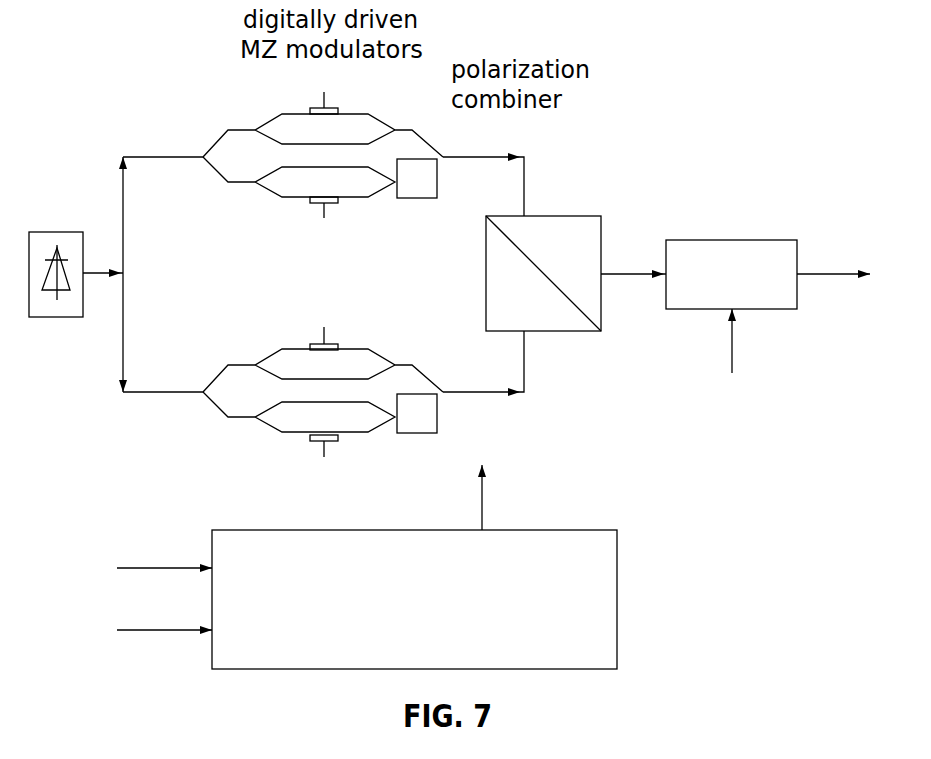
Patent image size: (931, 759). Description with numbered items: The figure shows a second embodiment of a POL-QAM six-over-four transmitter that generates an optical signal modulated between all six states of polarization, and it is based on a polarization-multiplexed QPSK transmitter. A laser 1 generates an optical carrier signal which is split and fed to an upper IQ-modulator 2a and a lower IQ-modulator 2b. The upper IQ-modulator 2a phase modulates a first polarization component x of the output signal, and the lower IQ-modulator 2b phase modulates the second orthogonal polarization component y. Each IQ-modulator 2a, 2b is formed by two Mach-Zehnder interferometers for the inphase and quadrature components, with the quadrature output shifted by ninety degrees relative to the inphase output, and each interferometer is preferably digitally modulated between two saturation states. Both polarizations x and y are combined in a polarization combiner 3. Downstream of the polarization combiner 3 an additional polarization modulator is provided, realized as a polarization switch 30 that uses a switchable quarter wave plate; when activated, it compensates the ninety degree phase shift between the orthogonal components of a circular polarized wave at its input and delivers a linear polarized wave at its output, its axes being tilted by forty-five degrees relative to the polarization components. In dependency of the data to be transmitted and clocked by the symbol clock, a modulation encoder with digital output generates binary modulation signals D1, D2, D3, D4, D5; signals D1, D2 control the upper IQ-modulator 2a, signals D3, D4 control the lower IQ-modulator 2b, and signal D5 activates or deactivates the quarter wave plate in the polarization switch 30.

The laser 1 is at (60, 232).
The upper IQ-modulator 2a is at (283, 153).
The lower IQ-modulator 2b is at (283, 388).
The polarization combiner 3 is at (486, 274).
The polarization switch 30 is at (778, 275).
The modulation signal D1 is at (330, 89).
The modulation signal D2 is at (330, 224).
The modulation signal D3 is at (330, 325).
The modulation signal D4 is at (330, 460).
The modulation signal D5 is at (751, 346).